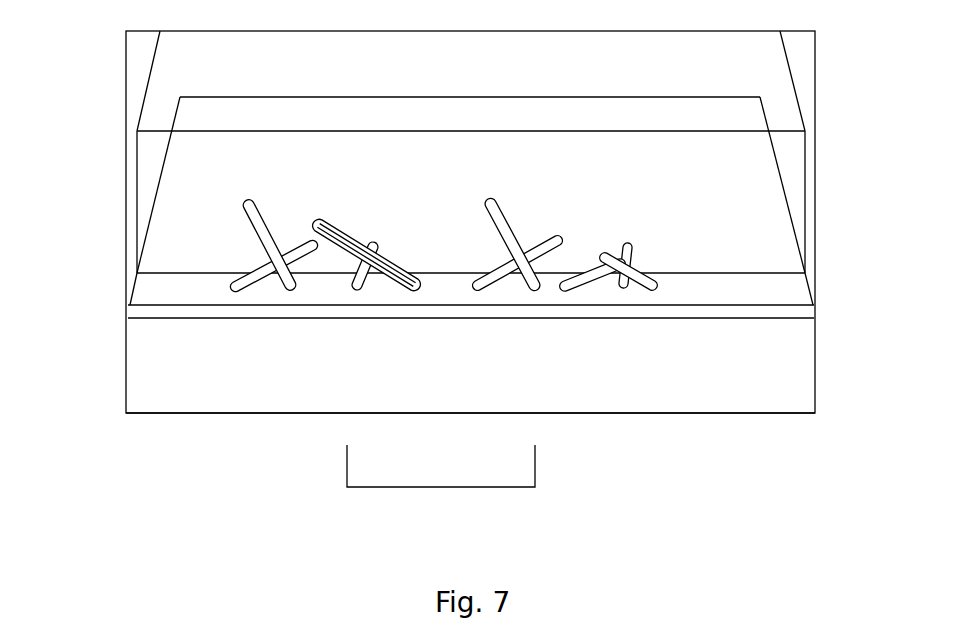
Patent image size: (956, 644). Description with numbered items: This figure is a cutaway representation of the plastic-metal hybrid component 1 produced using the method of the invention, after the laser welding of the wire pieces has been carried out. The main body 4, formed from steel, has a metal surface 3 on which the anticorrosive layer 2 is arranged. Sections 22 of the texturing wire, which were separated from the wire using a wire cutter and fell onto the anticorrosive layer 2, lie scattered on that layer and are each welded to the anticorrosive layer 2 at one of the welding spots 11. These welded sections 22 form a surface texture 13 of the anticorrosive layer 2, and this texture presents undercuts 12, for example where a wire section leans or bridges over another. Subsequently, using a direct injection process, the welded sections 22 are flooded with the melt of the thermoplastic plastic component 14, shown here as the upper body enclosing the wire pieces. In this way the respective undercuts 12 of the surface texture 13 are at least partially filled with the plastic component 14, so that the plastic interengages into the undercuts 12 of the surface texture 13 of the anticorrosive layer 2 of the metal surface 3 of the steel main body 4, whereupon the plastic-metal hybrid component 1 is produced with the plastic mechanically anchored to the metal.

The plastic-metal hybrid component 1 is at (825, 153).
The thermoplastic plastic component 14 is at (780, 98).
The anticorrosive layer 2 is at (795, 293).
The metal surface 3 is at (807, 312).
The main body 4 is at (797, 378).
The welding spots 11 is at (230, 290).
The undercuts 12 is at (370, 277).
The surface texture 13 is at (442, 487).
The sections of the texturing wire 22 is at (248, 213).